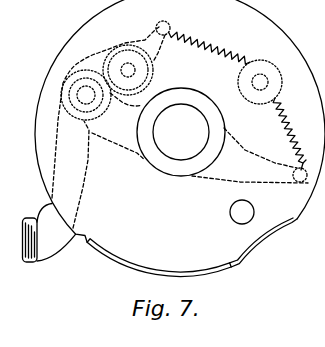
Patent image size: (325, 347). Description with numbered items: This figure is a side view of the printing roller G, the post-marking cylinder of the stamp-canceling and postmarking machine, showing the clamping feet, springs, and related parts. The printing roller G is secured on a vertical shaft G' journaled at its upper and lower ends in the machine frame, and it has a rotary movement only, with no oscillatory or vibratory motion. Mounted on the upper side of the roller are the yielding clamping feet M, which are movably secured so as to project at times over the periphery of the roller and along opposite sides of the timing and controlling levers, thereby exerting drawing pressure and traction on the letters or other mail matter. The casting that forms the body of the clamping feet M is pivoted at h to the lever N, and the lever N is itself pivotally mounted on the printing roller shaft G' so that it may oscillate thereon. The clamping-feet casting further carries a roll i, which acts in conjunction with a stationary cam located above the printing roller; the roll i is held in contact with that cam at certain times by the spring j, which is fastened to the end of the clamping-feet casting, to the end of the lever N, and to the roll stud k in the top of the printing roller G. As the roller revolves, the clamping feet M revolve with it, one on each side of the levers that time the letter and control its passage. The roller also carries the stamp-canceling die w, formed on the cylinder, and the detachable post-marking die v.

The printing roller G is at (180, 127).
The vertical shaft G' is at (181, 132).
The lever N is at (180, 127).
The clamping feet M is at (49, 233).
The pivot h is at (86, 95).
The roll i is at (128, 70).
The roll stud k is at (260, 82).
The spring j is at (231, 101).
The post-marking die v is at (272, 243).
The stamp-canceling die w is at (158, 276).